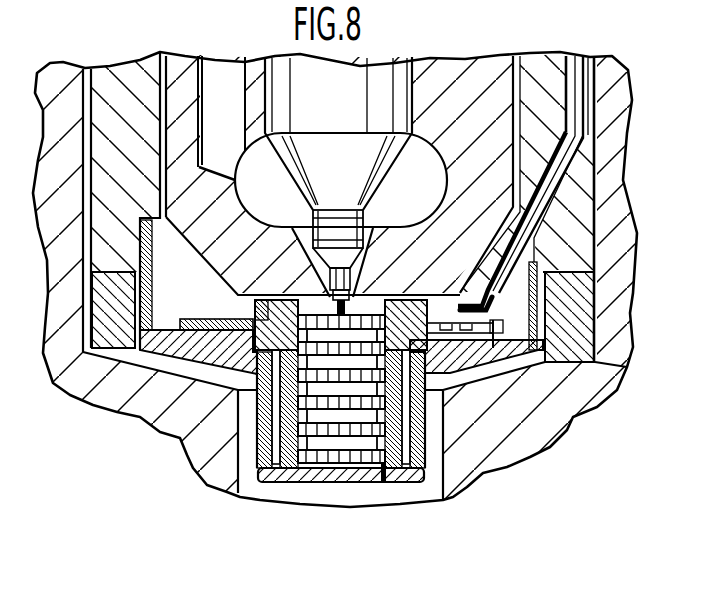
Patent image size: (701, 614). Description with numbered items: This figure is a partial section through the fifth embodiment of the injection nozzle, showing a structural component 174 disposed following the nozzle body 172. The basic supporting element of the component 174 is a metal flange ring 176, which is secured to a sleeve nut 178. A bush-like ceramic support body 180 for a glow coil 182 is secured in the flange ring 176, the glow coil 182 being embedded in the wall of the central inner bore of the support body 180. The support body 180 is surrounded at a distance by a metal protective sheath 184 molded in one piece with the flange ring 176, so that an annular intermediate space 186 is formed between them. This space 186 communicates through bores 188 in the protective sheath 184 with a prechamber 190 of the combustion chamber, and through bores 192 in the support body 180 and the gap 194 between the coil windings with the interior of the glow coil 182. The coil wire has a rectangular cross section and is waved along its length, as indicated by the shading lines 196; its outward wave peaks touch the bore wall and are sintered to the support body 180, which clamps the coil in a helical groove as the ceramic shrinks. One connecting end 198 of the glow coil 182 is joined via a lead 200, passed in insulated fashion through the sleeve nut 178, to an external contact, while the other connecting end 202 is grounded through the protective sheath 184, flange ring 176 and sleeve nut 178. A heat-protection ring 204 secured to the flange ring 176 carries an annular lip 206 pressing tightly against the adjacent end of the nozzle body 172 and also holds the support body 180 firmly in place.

The nozzle body 172 is at (466, 117).
The structural component 174 is at (301, 482).
The metal flange ring 176 is at (117, 410).
The sleeve nut 178 is at (126, 102).
The ceramic support body 180 is at (312, 482).
The glow coil 182 is at (337, 465).
The metal protective sheath 184 is at (240, 420).
The annular intermediate space 186 is at (274, 487).
The bores in the protective sheath 188 is at (411, 454).
The prechamber 190 is at (262, 398).
The bores in the support body 192 is at (182, 427).
The gap between the windings of the glow coil 194 is at (230, 392).
The shading lines 196 is at (363, 456).
The connecting end of the glow coil 198 is at (390, 296).
The lead 200 is at (500, 286).
The other connecting end of the glow coil 202 is at (384, 484).
The heat-protection ring 204 is at (208, 318).
The annular lip 206 is at (283, 296).